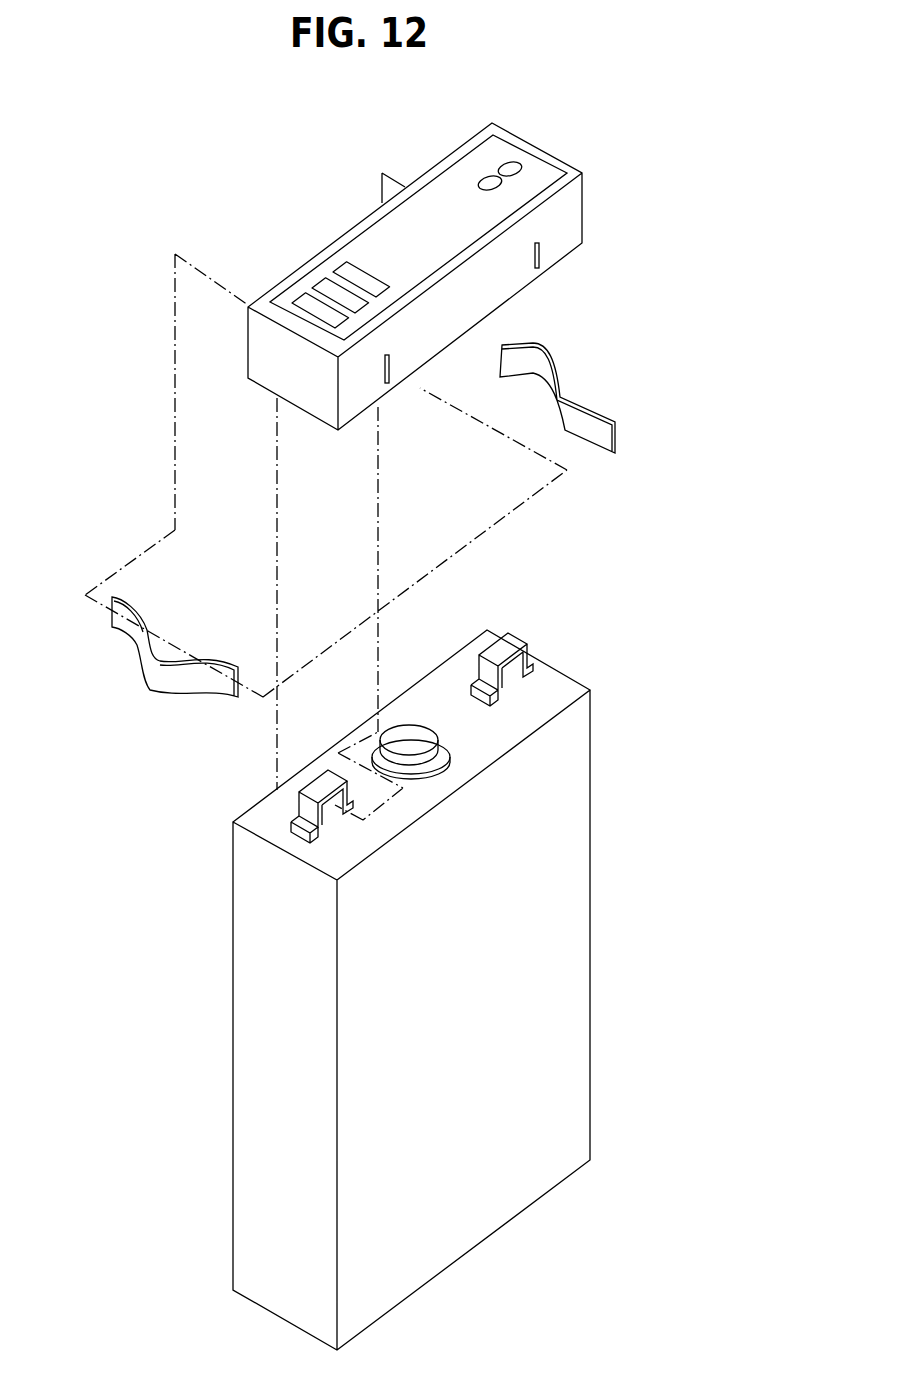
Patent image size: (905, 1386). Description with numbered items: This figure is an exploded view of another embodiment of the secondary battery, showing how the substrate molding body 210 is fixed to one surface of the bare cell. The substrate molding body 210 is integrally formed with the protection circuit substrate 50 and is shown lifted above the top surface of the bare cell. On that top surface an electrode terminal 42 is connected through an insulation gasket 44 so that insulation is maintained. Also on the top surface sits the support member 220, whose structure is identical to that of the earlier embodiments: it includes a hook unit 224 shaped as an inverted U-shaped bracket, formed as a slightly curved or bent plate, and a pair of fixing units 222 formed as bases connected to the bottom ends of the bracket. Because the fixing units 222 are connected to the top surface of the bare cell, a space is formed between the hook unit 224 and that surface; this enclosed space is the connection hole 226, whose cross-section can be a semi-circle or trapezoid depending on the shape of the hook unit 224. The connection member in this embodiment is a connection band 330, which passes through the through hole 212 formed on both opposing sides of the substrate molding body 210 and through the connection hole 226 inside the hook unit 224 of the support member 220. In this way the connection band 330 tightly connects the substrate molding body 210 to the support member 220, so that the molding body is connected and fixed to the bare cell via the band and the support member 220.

The protection circuit substrate 50 is at (363, 247).
The substrate molding body 210 is at (583, 197).
The through hole 212 is at (543, 254).
The connection band 330 is at (157, 676).
The support member 220 is at (530, 636).
The fixing unit 222 is at (297, 841).
The hook unit 224 is at (304, 798).
The connection hole 226 is at (343, 808).
The electrode terminal 42 is at (435, 772).
The insulation gasket 44 is at (415, 748).